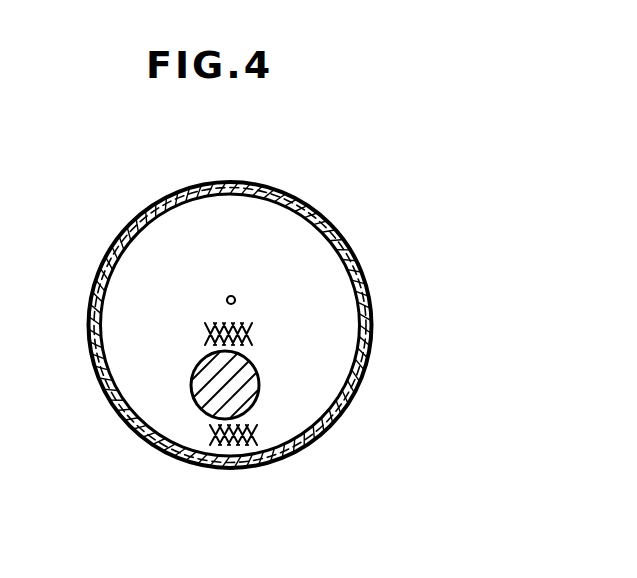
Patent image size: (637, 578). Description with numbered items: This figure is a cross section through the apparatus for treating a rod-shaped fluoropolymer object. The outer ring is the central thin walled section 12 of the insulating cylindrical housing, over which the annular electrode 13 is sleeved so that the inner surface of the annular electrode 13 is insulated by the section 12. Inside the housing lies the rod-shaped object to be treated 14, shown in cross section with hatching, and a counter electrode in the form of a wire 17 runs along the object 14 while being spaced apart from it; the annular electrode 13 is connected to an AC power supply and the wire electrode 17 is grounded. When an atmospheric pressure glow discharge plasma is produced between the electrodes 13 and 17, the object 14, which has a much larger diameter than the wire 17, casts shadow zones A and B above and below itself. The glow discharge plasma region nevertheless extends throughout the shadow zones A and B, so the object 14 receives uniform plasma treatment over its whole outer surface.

The central thin walled section 12 is at (318, 213).
The annular electrode 13 is at (270, 191).
The wire electrode 17 is at (235, 298).
The object to be treated 14 is at (257, 377).
The shadow zone A is at (257, 330).
The shadow zone B is at (260, 430).